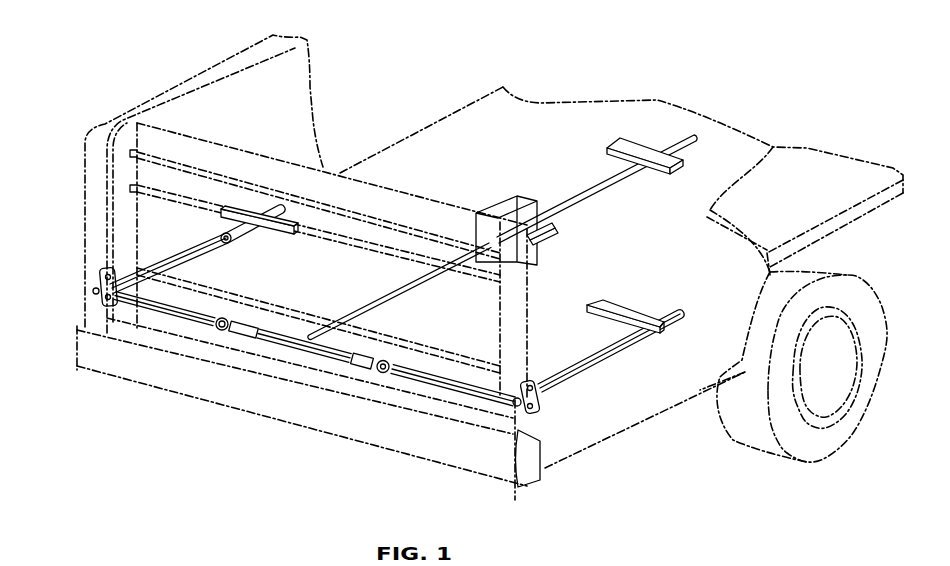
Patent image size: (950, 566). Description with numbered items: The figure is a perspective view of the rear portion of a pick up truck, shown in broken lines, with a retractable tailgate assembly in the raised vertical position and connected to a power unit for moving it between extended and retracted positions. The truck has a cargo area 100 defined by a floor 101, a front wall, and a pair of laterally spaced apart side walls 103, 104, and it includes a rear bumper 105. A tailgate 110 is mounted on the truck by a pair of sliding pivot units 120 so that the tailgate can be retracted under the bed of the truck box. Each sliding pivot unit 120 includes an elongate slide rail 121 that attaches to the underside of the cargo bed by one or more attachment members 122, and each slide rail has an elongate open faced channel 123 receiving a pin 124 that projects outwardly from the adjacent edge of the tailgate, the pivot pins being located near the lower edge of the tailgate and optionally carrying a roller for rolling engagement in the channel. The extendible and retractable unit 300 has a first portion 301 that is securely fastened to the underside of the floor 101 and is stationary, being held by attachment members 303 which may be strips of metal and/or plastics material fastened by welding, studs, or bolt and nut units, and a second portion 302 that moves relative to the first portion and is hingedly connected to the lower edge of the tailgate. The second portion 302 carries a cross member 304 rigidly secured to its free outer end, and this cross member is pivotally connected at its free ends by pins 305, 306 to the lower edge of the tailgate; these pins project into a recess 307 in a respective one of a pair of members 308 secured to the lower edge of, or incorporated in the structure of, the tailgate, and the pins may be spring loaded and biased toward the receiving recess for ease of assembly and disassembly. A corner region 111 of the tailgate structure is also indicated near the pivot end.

The cargo area 100 is at (513, 131).
The floor 101 is at (817, 207).
The side wall 103 is at (775, 147).
The side wall 104 is at (197, 75).
The rear bumper 105 is at (93, 347).
The tailgate 110 is at (365, 286).
The corner post 111 is at (513, 488).
The sliding pivot unit 120 is at (365, 346).
The slide rail 121 is at (645, 346).
The attachment member 122 is at (285, 235).
The open faced channel 123 is at (192, 258).
The pin 124 is at (512, 418).
The extension assembly 300 is at (368, 271).
The first portion 301 is at (596, 193).
The second portion 302 is at (423, 286).
The attachment member 303 is at (637, 142).
The cross member 304 is at (293, 347).
The pin 305 is at (367, 362).
The pin 306 is at (228, 333).
The recess 307 is at (215, 315).
The member 308 is at (160, 300).